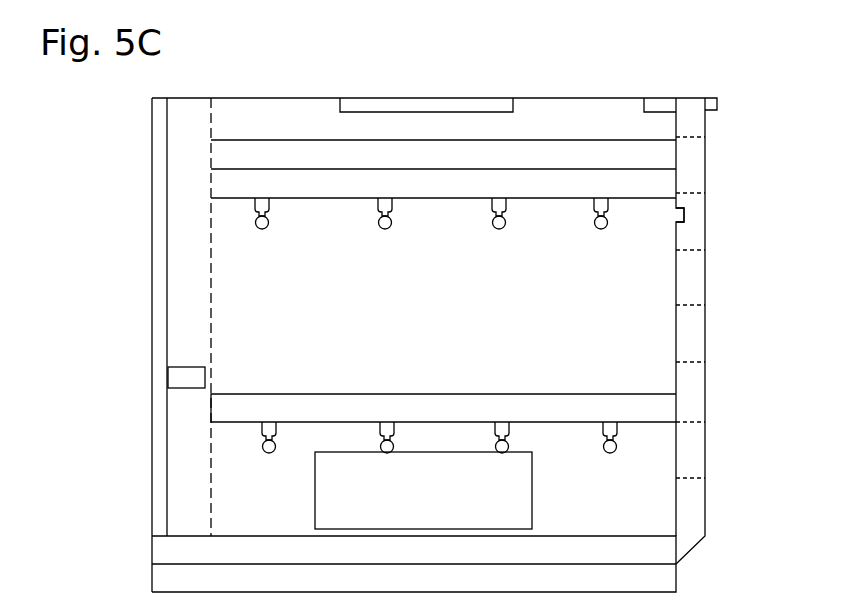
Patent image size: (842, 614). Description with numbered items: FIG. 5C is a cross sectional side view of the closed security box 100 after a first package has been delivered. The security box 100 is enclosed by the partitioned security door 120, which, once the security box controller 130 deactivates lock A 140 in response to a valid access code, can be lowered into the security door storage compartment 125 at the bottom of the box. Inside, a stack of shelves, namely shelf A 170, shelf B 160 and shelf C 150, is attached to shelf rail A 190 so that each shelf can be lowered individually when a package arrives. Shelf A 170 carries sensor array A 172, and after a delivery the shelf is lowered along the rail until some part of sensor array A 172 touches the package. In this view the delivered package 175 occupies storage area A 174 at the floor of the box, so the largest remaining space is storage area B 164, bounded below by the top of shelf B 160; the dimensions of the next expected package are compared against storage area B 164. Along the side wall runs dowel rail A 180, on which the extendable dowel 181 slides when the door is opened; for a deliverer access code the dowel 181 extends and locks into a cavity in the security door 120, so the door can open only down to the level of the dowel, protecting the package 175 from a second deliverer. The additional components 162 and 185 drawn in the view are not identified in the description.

The security box 100 is at (270, 98).
The security door 120 is at (706, 524).
The security door storage compartment 125 is at (414, 564).
The security box controller 130 is at (493, 97).
The lock A 140 is at (668, 102).
The shelf C 150 is at (459, 162).
The shelf B 160 is at (459, 196).
The upper nozzles 162 is at (634, 208).
The storage area B 164 is at (454, 302).
The shelf A 170 is at (443, 408).
The sensor array A 172 is at (622, 423).
The storage area A 174 is at (273, 496).
The delivered package 175 is at (450, 501).
The dowel rail A 180 is at (163, 290).
The extendable dowel 181 is at (187, 375).
The wall notch 185 is at (684, 213).
The shelf rail A 190 is at (211, 243).